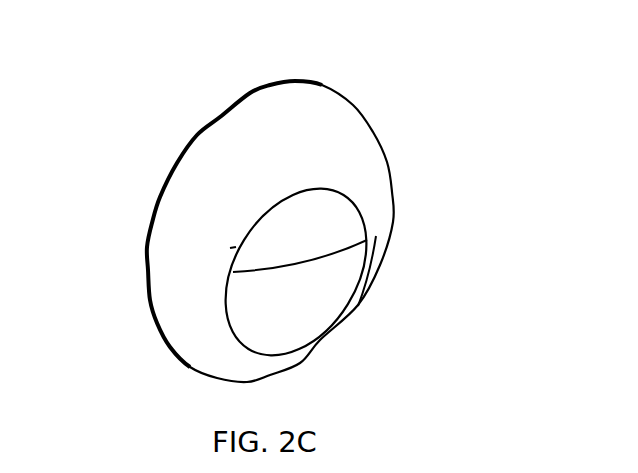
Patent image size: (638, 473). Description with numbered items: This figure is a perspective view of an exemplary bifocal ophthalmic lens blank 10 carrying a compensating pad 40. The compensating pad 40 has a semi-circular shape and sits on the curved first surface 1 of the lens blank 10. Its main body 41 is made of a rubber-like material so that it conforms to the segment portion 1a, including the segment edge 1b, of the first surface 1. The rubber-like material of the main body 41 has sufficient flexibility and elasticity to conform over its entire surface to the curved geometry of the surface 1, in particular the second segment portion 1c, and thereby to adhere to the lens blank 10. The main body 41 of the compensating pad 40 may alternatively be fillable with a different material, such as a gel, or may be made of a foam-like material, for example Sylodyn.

The bifocal ophthalmic lens blank 10 is at (522, 76).
The first surface 1 is at (327, 122).
The segment portion 1a is at (323, 303).
The segment edge 1b is at (367, 240).
The second segment portion 1c is at (207, 160).
The compensating pad 40 is at (236, 247).
The main body 41 is at (335, 223).